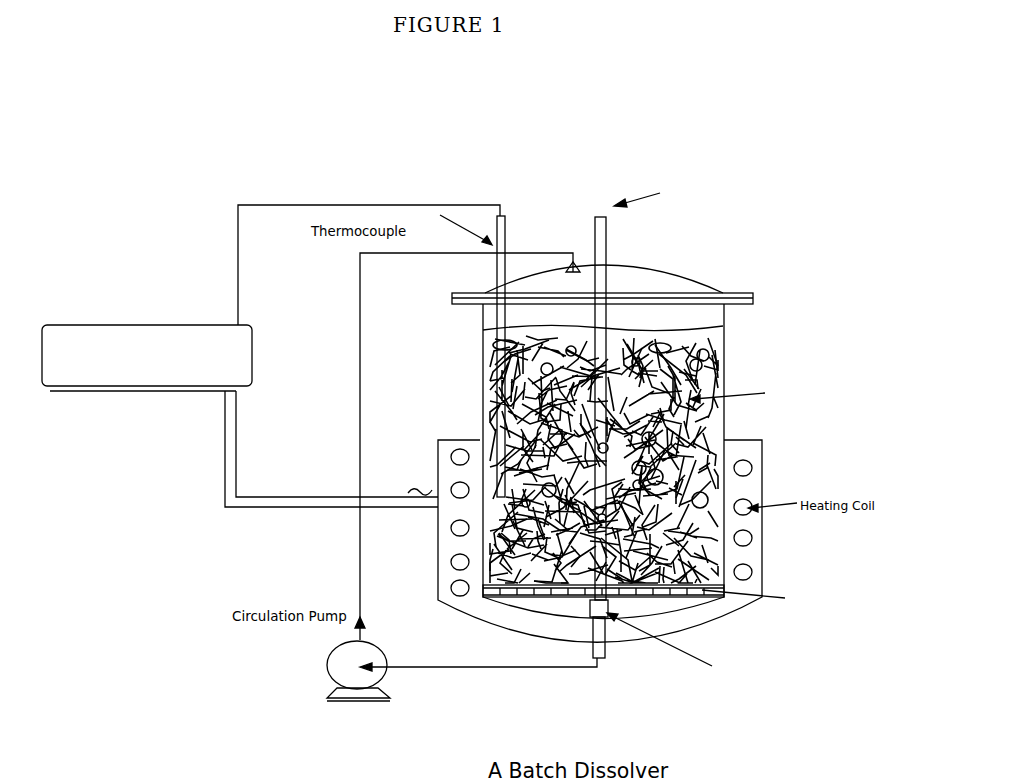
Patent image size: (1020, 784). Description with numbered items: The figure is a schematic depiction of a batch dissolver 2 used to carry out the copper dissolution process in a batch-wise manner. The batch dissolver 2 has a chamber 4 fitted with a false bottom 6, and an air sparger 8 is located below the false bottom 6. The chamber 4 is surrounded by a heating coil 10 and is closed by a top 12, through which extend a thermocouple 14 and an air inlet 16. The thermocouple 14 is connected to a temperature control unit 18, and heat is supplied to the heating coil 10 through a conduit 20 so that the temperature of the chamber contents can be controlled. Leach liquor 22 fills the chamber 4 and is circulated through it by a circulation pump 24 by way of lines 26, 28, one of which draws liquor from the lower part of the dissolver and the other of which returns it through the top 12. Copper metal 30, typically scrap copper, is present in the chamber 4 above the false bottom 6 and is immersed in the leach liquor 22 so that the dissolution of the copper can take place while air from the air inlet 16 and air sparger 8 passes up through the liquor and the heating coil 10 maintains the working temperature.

The batch dissolver 2 is at (651, 446).
The chamber 4 is at (483, 366).
The false bottom 6 is at (712, 598).
The air sparger 8 is at (610, 615).
The heating coil 10 is at (760, 480).
The top 12 is at (668, 292).
The thermocouple 14 is at (497, 264).
The air inlet 16 is at (607, 250).
The temperature control unit 18 is at (252, 352).
The conduit 20 is at (240, 477).
The leach liquor 22 is at (717, 333).
The circulation pump 24 is at (376, 650).
The line 26 is at (480, 669).
The line 28 is at (397, 253).
The copper metal 30 is at (693, 393).